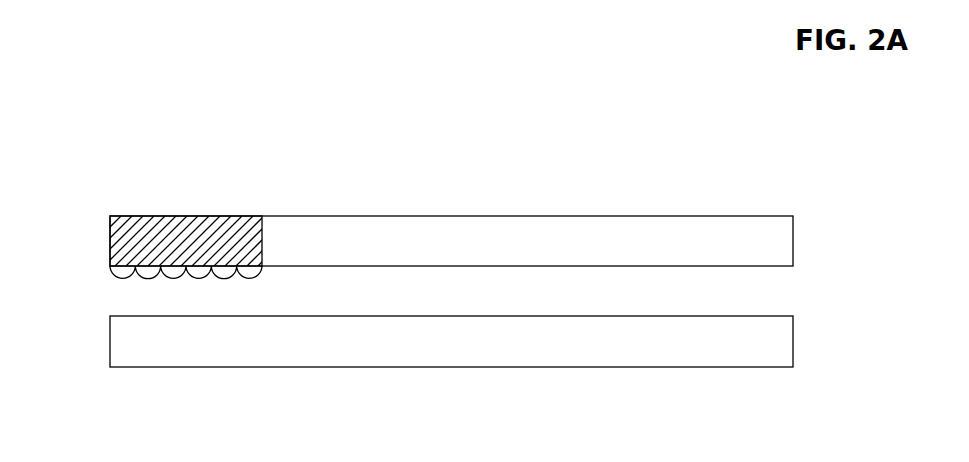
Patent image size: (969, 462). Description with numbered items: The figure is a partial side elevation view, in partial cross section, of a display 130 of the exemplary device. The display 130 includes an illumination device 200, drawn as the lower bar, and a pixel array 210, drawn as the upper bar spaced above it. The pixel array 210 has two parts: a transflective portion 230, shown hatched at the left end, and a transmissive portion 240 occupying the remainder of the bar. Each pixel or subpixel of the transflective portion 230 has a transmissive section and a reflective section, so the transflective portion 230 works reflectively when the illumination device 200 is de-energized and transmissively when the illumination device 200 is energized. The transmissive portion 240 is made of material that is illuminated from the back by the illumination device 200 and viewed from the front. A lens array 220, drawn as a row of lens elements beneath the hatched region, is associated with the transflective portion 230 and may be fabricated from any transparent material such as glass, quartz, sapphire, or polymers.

The display 130 is at (152, 62).
The illumination device 200 is at (460, 377).
The pixel array 210 is at (656, 205).
The lens array 220 is at (103, 282).
The transflective portion 230 is at (189, 227).
The transmissive portion 240 is at (491, 228).